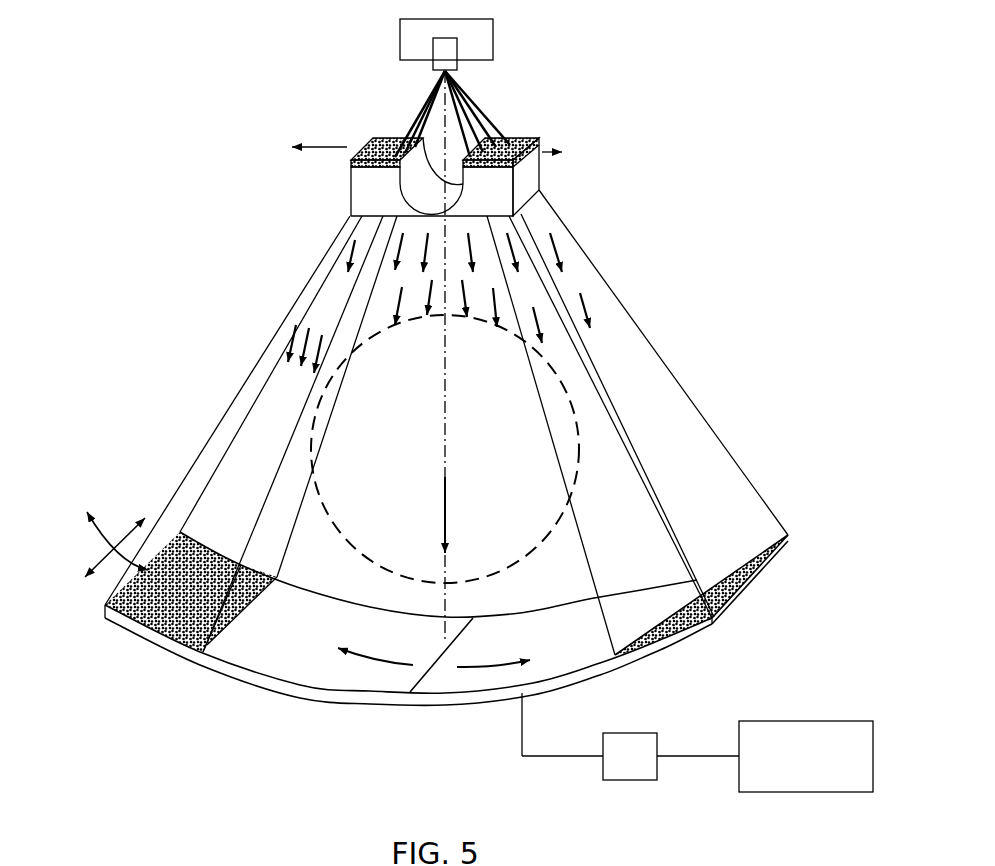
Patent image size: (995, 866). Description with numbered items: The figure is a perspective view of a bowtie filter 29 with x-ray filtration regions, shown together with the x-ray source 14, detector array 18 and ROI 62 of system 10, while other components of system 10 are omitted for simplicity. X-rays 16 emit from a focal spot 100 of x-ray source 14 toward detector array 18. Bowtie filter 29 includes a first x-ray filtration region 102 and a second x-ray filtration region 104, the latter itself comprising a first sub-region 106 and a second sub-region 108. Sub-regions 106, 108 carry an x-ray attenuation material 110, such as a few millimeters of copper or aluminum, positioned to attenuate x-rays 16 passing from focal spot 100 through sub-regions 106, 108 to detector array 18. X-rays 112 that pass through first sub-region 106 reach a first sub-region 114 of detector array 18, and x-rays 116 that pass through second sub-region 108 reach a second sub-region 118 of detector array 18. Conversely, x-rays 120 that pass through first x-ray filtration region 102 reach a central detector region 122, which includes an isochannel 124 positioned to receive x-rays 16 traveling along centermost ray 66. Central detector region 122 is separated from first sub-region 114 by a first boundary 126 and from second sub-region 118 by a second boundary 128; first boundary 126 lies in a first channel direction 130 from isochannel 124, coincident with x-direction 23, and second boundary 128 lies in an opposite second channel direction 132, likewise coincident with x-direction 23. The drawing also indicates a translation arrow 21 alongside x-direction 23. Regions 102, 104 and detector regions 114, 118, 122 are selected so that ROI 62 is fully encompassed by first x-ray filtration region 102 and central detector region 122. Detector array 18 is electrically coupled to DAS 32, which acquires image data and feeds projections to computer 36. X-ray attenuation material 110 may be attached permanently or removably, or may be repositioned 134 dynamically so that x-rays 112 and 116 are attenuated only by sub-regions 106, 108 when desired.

The system 10 is at (632, 95).
The x-ray source 14 is at (482, 42).
The x-rays 16 is at (397, 252).
The detector array 18 is at (780, 490).
The translation direction arrow 21 is at (107, 565).
The x-direction 23 is at (98, 538).
The bowtie filter 29 is at (530, 173).
The DAS 32 is at (671, 756).
The computer 36 is at (806, 756).
The ROI 62 is at (567, 393).
The centermost ray 66 is at (447, 515).
The focal spot 100 is at (460, 78).
The first x-ray filtration region 102 is at (457, 134).
The second x-ray filtration region 104 is at (395, 102).
The first sub-region 106 is at (367, 190).
The second sub-region 108 is at (493, 185).
The x-ray attenuation material 110 is at (378, 137).
The x-rays 112 is at (313, 323).
The first sub-region of detector array 114 is at (167, 617).
The x-rays 116 is at (563, 298).
The second sub-region of detector array 118 is at (698, 627).
The x-rays 120 is at (432, 297).
The central detector region 122 is at (313, 668).
The isochannel 124 is at (433, 693).
The first boundary 126 is at (225, 638).
The second boundary 128 is at (643, 633).
The first channel direction 130 is at (373, 658).
The second channel direction 132 is at (495, 657).
The repositioning 134 is at (320, 147).